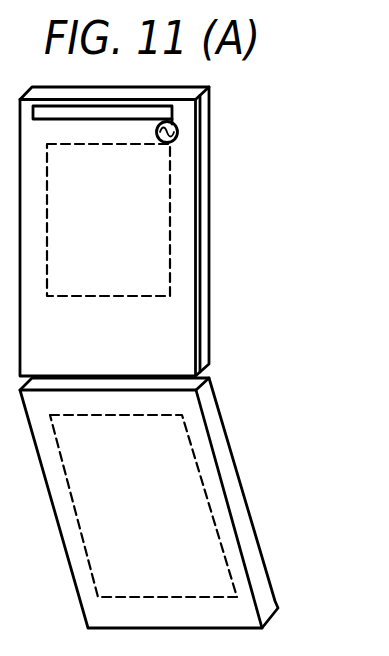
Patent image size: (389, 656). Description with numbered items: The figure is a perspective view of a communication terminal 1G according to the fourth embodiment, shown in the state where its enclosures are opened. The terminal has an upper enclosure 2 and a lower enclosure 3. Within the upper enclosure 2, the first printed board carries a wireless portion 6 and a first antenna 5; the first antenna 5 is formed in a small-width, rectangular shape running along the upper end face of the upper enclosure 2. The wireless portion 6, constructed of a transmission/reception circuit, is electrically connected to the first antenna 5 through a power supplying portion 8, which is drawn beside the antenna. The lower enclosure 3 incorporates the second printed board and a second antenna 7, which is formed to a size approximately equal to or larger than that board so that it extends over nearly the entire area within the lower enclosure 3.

The communication terminal 1G is at (259, 206).
The upper enclosure 2 is at (178, 326).
The lower enclosure 3 is at (243, 608).
The first antenna 5 is at (172, 108).
The wireless portion 6 is at (168, 239).
The second antenna 7 is at (207, 528).
The power supplying portion 8 is at (178, 131).